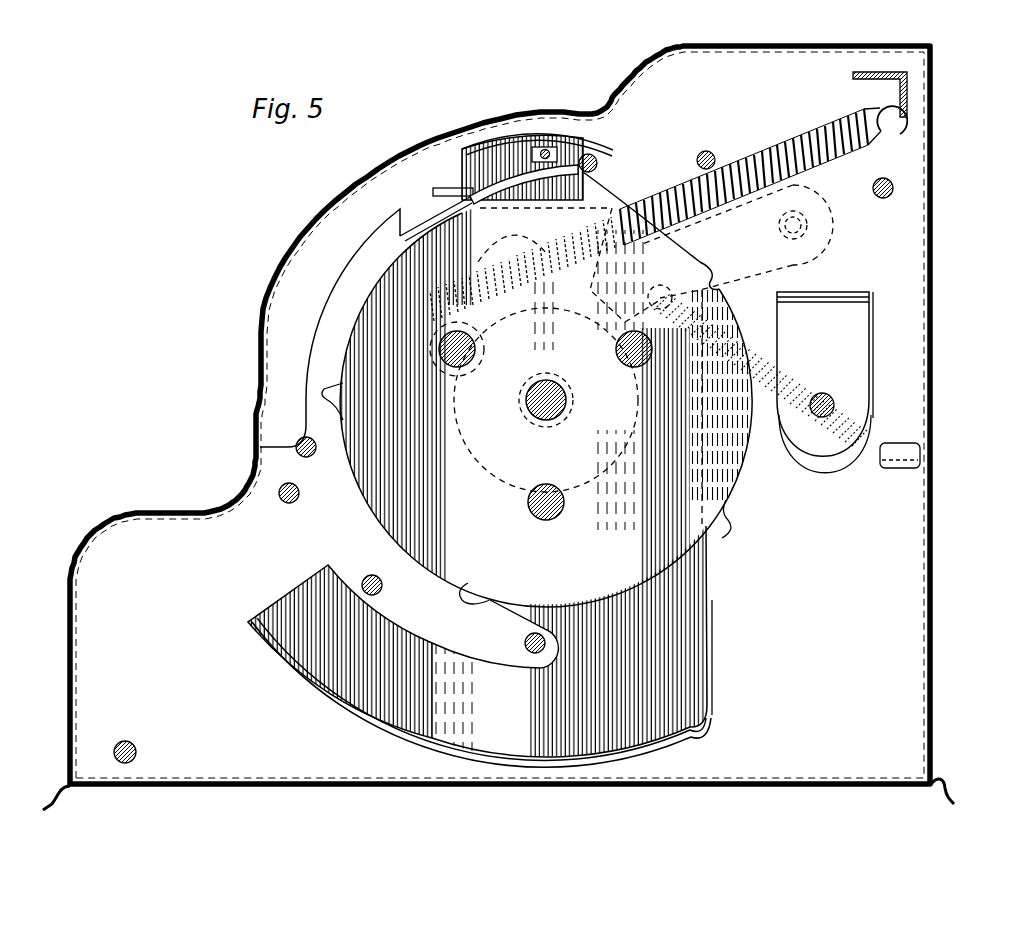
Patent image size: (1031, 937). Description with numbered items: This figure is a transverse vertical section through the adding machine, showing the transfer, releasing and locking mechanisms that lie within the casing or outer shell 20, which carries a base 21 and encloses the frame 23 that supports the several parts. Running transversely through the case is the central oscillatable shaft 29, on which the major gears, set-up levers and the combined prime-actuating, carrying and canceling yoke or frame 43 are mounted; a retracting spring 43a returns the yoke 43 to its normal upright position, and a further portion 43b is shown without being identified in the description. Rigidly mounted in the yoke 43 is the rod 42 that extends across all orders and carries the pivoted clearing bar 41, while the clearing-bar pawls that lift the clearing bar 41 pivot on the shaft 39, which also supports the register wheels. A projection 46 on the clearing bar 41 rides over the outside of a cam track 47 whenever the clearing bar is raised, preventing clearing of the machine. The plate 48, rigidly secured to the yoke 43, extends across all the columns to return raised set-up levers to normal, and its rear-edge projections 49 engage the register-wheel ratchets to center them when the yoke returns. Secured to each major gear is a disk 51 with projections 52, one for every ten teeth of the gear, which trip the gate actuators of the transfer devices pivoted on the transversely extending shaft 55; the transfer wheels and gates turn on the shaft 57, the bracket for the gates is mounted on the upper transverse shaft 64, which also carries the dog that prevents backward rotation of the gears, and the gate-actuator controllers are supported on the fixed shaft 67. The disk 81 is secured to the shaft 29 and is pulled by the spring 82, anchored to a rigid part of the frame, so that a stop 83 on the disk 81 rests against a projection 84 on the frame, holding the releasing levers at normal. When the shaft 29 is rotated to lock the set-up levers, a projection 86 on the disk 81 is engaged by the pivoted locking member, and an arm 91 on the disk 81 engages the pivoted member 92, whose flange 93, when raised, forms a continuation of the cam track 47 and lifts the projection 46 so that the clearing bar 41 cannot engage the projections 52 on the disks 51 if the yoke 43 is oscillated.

The casing or outer shell 20 is at (360, 193).
The base 21 is at (62, 797).
The frame 23 is at (258, 455).
The central oscillatable shaft 29 is at (546, 421).
The shaft 39 is at (710, 153).
The clearing bar 41 is at (522, 168).
The rod 42 is at (548, 150).
The yoke bar or frame 43 is at (494, 150).
The retracting spring 43a is at (876, 146).
The spring lower end 43b is at (714, 741).
The projection 46 is at (437, 189).
The cam track 47 is at (340, 275).
The plate 48 is at (479, 150).
The projections 49 is at (594, 153).
The disk 51 is at (726, 510).
The projections 52 is at (478, 604).
The transversely extending shaft 55 is at (372, 576).
The transversely arranged shaft 57 is at (524, 642).
The transversely extending rod or upper shaft 64 is at (827, 400).
The fixed transversely extending shaft 67 is at (290, 504).
The disk 81 is at (544, 400).
The spring 82 is at (868, 458).
The stop 83 is at (455, 370).
The projection 84 is at (480, 331).
The projection 86 is at (530, 503).
The arm 91 is at (630, 322).
The pivoted member 92 is at (622, 206).
The flange 93 is at (423, 224).